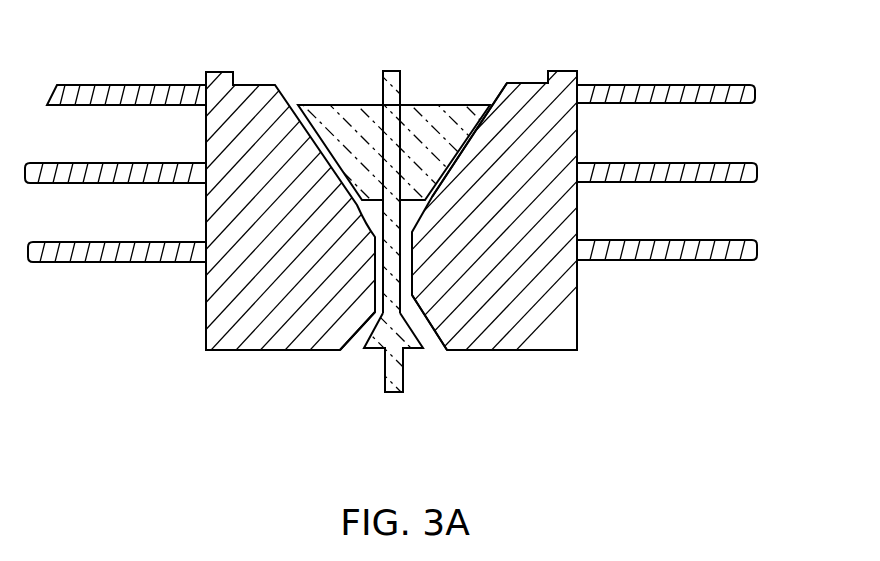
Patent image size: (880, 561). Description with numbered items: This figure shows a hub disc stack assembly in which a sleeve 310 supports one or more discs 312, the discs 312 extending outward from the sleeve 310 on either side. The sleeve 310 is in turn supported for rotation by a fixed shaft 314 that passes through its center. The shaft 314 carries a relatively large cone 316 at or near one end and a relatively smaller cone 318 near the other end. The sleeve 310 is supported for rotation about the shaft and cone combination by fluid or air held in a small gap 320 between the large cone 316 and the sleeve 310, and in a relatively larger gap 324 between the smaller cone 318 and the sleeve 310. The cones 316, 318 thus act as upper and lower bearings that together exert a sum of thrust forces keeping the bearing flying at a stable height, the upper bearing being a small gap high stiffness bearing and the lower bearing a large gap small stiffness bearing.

The sleeve 310 is at (533, 340).
The discs 312 is at (723, 92).
The fixed shaft 314 is at (388, 75).
The relatively large cone 316 is at (332, 107).
The relatively smaller cone 318 is at (410, 358).
The gap 320 is at (493, 107).
The relatively larger gap 324 is at (360, 337).